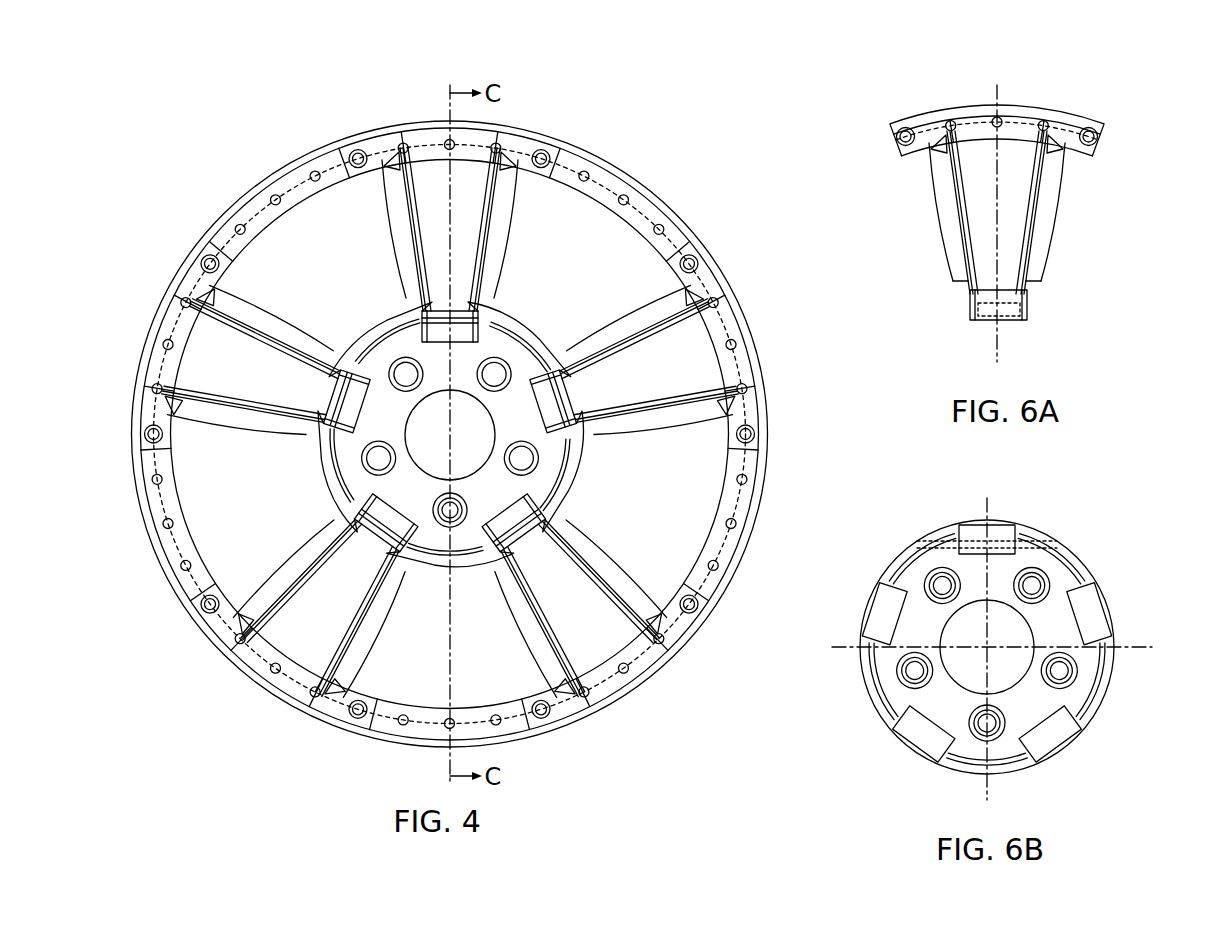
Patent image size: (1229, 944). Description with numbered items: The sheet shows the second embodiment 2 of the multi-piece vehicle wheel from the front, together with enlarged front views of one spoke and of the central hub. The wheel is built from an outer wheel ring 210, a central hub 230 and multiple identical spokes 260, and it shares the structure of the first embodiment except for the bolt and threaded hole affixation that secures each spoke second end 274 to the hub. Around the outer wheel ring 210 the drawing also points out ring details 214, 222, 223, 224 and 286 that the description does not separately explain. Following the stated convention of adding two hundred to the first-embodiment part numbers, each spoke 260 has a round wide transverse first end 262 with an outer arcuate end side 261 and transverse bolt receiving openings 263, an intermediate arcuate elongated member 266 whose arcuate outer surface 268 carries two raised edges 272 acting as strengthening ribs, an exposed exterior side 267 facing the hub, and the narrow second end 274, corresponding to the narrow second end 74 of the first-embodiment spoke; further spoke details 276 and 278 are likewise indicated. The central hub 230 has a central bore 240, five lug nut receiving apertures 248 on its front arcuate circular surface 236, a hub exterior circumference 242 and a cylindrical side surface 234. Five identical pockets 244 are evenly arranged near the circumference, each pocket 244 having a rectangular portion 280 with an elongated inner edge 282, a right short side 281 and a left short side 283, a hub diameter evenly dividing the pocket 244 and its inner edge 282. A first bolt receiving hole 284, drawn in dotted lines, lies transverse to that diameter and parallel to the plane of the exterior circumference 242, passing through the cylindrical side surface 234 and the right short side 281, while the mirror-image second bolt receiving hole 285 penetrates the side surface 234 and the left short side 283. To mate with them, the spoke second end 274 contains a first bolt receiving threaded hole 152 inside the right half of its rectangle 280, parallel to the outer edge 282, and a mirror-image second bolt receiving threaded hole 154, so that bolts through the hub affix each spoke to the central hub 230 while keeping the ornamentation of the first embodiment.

In FIG. 4, the second embodiment of the multi-piece wheel 2 is at (182, 100).
In FIG. 4, the outer wheel ring 210 is at (277, 230).
In FIG. 4, the rim outer flange 214 is at (258, 188).
In FIG. 4, the rim inner edge 222 is at (335, 184).
In FIG. 4, the rim band 223 is at (606, 178).
In FIG. 4, the rim fastener holes 224 is at (312, 172).
In FIG. 4, the rim attachment tabs 286 is at (347, 155).
In FIG. 4, the spokes 260 is at (510, 228).
In FIG. 6A, the spokes 260 is at (1122, 215).
In FIG. 4, the central hub 230 is at (528, 322).
In FIG. 6B, the central hub 230 is at (1154, 640).
In FIG. 4, the pocket 244 is at (430, 304).
In FIG. 6B, the pocket 244 is at (992, 528).
In FIG. 4, the spoke second end 274 is at (422, 340).
In FIG. 6A, the spoke second end 274 is at (1007, 343).
In FIG. 4, the narrow second end of the spoke 74 is at (353, 405).
In FIG. 4, the hub bolt holes 248 is at (498, 366).
In FIG. 6B, the hub bolt holes 248 is at (1037, 583).
In FIG. 4, the hub center bore 240 is at (456, 456).
In FIG. 6B, the hub center bore 240 is at (953, 643).
In FIG. 4, the bolt hole insert 236 is at (472, 505).
In FIG. 6B, the bolt hole insert 236 is at (1010, 710).
In FIG. 4, the hub exterior circumference 242 is at (330, 458).
In FIG. 6B, the hub exterior circumference 242 is at (1080, 570).
In FIG. 4, the hub cylindrical side surface 234 is at (585, 490).
In FIG. 6B, the hub cylindrical side surface 234 is at (1097, 582).
In FIG. 4, the spoke hooks 267 is at (572, 506).
In FIG. 6A, the spoke hooks 267 is at (970, 283).
In FIG. 6A, the rim segment 261 is at (1027, 110).
In FIG. 6A, the rim tab plate 262 is at (1049, 118).
In FIG. 6A, the rim hole 263 is at (1000, 116).
In FIG. 6A, the spoke body 266 is at (932, 209).
In FIG. 6A, the spoke web 268 is at (982, 191).
In FIG. 6A, the spoke ribs 272 is at (973, 243).
In FIG. 6A, the right rib 276 is at (1027, 277).
In FIG. 6A, the left rib 278 is at (972, 272).
In FIG. 6A, the right short side of the pocket rectangular portion 281 is at (1027, 305).
In FIG. 6B, the right short side of the pocket rectangular portion 281 is at (1018, 540).
In FIG. 6A, the left short side of the pocket 283 is at (970, 300).
In FIG. 6B, the left short side of the pocket 283 is at (957, 542).
In FIG. 6A, the second bolt receiving threaded hole 154 is at (970, 315).
In FIG. 6A, the first bolt receiving threaded hole 152 is at (1027, 312).
In FIG. 6A, the elongated inner edge of the pocket rectangular portion 282 is at (992, 322).
In FIG. 6A, the rectangular portion of the pocket 280 is at (1015, 322).
In FIG. 6B, the rectangular portion of the pocket 280 is at (957, 533).
In FIG. 6B, the first bolt receiving hole 284 is at (1013, 540).
In FIG. 6B, the second bolt receiving hole 285 is at (945, 547).